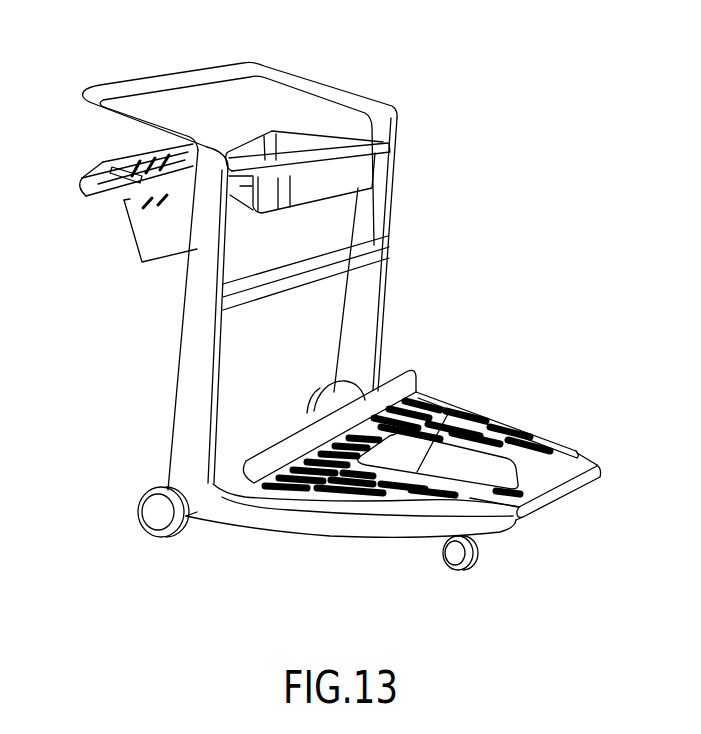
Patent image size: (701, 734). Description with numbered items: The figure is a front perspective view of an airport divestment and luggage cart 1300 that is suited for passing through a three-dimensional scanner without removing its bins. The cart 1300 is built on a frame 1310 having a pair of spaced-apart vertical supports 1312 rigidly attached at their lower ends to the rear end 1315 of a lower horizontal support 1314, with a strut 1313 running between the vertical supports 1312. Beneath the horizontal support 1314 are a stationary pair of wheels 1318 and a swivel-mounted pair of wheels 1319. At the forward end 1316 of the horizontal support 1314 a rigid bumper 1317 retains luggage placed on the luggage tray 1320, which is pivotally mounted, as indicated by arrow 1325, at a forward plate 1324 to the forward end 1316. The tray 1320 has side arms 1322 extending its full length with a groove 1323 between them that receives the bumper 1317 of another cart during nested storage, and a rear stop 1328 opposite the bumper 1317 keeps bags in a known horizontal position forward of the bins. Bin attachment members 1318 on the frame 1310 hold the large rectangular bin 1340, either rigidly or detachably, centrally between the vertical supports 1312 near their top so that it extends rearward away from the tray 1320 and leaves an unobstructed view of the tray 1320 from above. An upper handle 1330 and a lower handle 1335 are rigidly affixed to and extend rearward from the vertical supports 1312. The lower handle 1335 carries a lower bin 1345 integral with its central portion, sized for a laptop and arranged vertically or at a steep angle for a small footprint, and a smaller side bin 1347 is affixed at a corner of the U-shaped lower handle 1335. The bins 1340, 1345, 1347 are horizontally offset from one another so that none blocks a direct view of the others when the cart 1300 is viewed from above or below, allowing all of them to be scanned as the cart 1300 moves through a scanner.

The airport divestment and luggage cart 1300 is at (124, 580).
The frame 1310 is at (418, 266).
The vertical supports 1312 is at (347, 352).
The strut 1313 is at (294, 290).
The lower horizontal support 1314 is at (288, 538).
The rear end 1315 is at (197, 512).
The forward end 1316 is at (491, 508).
The bumper 1317 is at (587, 478).
The stationary wheels 1318 is at (262, 208).
The swivel-mounted wheels 1319 is at (453, 563).
The luggage tray 1320 is at (512, 404).
The side arms 1322 is at (473, 408).
The groove 1323 is at (523, 440).
The forward plate 1324 is at (580, 455).
The pivot arrow 1325 is at (522, 517).
The rear stop 1328 is at (435, 355).
The upper handle 1330 is at (172, 56).
The lower handle 1335 is at (80, 218).
The bin 1340 is at (396, 171).
The lower bin 1345 is at (126, 276).
The left side bin 1347 is at (90, 152).